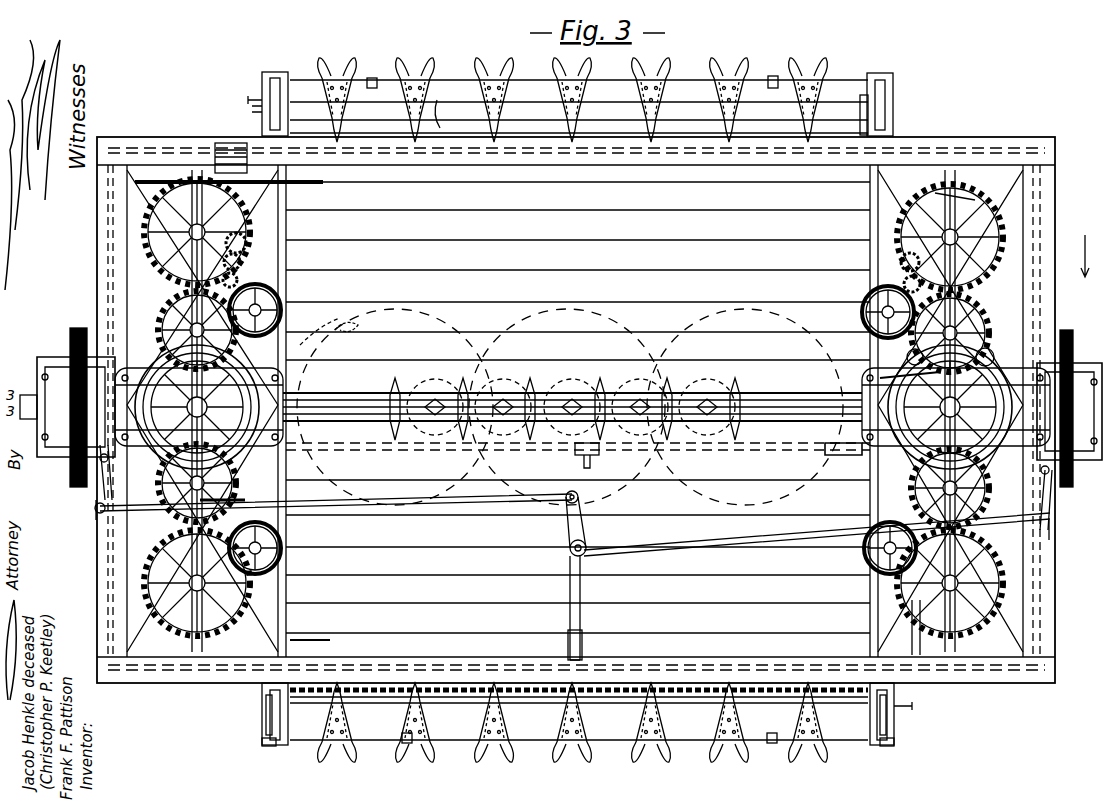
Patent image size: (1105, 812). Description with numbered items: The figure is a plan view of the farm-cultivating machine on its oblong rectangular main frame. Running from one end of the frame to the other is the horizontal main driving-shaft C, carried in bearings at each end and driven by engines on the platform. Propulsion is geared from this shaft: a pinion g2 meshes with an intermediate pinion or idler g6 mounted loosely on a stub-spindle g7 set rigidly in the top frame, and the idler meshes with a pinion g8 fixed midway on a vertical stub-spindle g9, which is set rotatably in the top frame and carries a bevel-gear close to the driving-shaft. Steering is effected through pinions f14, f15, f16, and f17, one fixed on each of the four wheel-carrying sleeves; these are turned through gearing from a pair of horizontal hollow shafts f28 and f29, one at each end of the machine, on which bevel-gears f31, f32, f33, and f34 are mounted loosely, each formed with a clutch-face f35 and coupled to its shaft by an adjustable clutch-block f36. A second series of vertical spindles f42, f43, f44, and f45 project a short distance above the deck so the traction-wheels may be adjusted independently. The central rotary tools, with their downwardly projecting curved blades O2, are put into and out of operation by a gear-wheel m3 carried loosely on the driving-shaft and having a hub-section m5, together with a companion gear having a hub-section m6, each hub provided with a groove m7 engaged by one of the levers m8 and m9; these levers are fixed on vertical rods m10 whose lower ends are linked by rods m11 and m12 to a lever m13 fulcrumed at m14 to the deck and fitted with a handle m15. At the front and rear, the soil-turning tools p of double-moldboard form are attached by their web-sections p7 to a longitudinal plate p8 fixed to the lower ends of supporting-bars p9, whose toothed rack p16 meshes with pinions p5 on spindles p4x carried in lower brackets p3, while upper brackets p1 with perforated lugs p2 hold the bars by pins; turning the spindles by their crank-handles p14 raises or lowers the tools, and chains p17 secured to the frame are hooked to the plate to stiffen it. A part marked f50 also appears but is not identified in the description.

The soil-turning tools p is at (482, 62).
The brackets p1 is at (893, 116).
The perforated lugs p2 is at (890, 96).
The lower brackets p3 is at (264, 740).
The spindles p4x is at (437, 100).
The pinions p5 is at (252, 110).
The web-sections p7 is at (585, 735).
The plate p8 is at (522, 774).
The supporting-bars p9 is at (266, 716).
The crank-handles p14 is at (256, 100).
The toothed rack p16 is at (372, 78).
The chains p17 is at (362, 700).
The pinion g2 is at (140, 232).
The intermediate pinion or idler g6 is at (156, 326).
The stub-spindle g7 is at (905, 356).
The pinion g8 is at (965, 356).
The vertical stub-spindle g9 is at (890, 380).
The pinion f14 is at (150, 598).
The pinion f15 is at (976, 598).
The pinion f16 is at (976, 216).
The pinion f17 is at (192, 200).
The horizontal hollow shaft f28 is at (248, 236).
The horizontal hollow shaft f29 is at (910, 660).
The bevel-gear f31 is at (250, 505).
The bevel-gear f32 is at (910, 494).
The bevel-gear f33 is at (905, 286).
The bevel-gear f34 is at (240, 278).
The clutch-faces f35 is at (902, 264).
The clutch-blocks f36 is at (242, 258).
The vertical spindle f42 is at (283, 552).
The vertical spindle f43 is at (864, 550).
The vertical spindle f44 is at (864, 302).
The vertical spindle f45 is at (283, 302).
The bar f50 is at (318, 668).
The hub-section m5 is at (70, 366).
The hub-section m6 is at (1085, 364).
The groove m7 is at (90, 452).
The gear-wheel m3 is at (98, 462).
The lever m8 is at (82, 501).
The lever m9 is at (1067, 497).
The vertical rods m10 is at (582, 534).
The rod m11 is at (461, 512).
The rod m12 is at (718, 548).
The lever m13 is at (581, 596).
The fulcrum m14 is at (570, 548).
The handle m15 is at (582, 656).
The blades O2 is at (355, 320).
The horizontal driving-shaft C is at (570, 407).